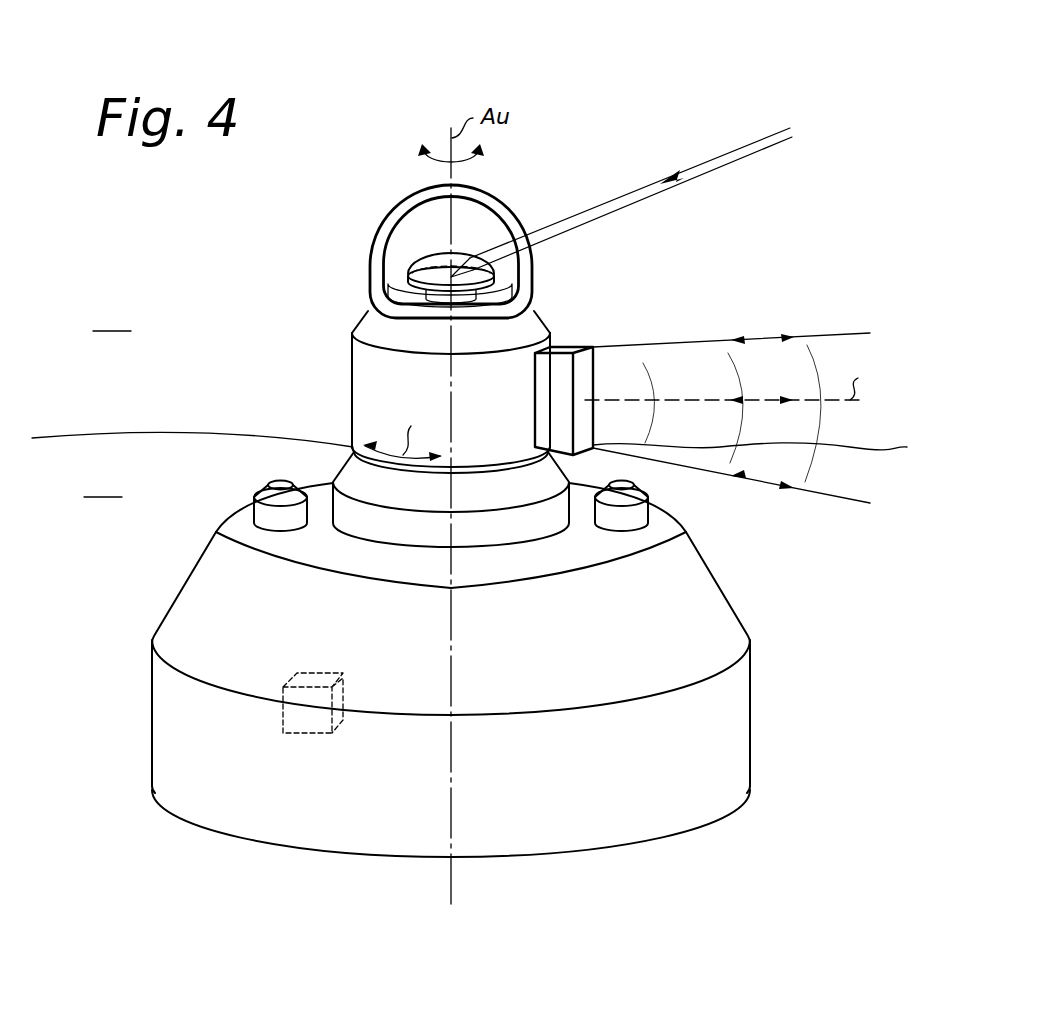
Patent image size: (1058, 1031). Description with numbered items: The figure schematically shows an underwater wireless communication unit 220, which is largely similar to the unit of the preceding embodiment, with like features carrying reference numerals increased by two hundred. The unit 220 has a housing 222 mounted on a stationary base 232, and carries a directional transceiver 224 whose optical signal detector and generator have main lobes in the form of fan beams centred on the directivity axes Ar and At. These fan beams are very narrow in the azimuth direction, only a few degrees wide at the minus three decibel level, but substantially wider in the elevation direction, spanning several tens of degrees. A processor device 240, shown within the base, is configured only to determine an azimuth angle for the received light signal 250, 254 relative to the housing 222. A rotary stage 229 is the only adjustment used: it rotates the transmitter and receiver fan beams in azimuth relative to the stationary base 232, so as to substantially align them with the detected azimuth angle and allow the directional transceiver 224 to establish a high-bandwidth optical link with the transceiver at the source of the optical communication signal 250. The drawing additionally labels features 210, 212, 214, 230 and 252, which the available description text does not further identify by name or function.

The first medium (above interface) 210 is at (131, 331).
The second medium (below interface) 212 is at (122, 497).
The interface / surface 214 is at (169, 450).
The communication unit 220 is at (562, 100).
The housing 222 is at (146, 697).
The directional transceiver 224 is at (553, 388).
The rotary stage 229 is at (353, 447).
The optical head / lens 230 is at (430, 260).
The stationary base 232 is at (722, 738).
The processor device 240 is at (303, 717).
The optical communication signal 250 is at (688, 172).
The transmitted/received signal 252 is at (805, 362).
The received light signal 254 is at (665, 150).